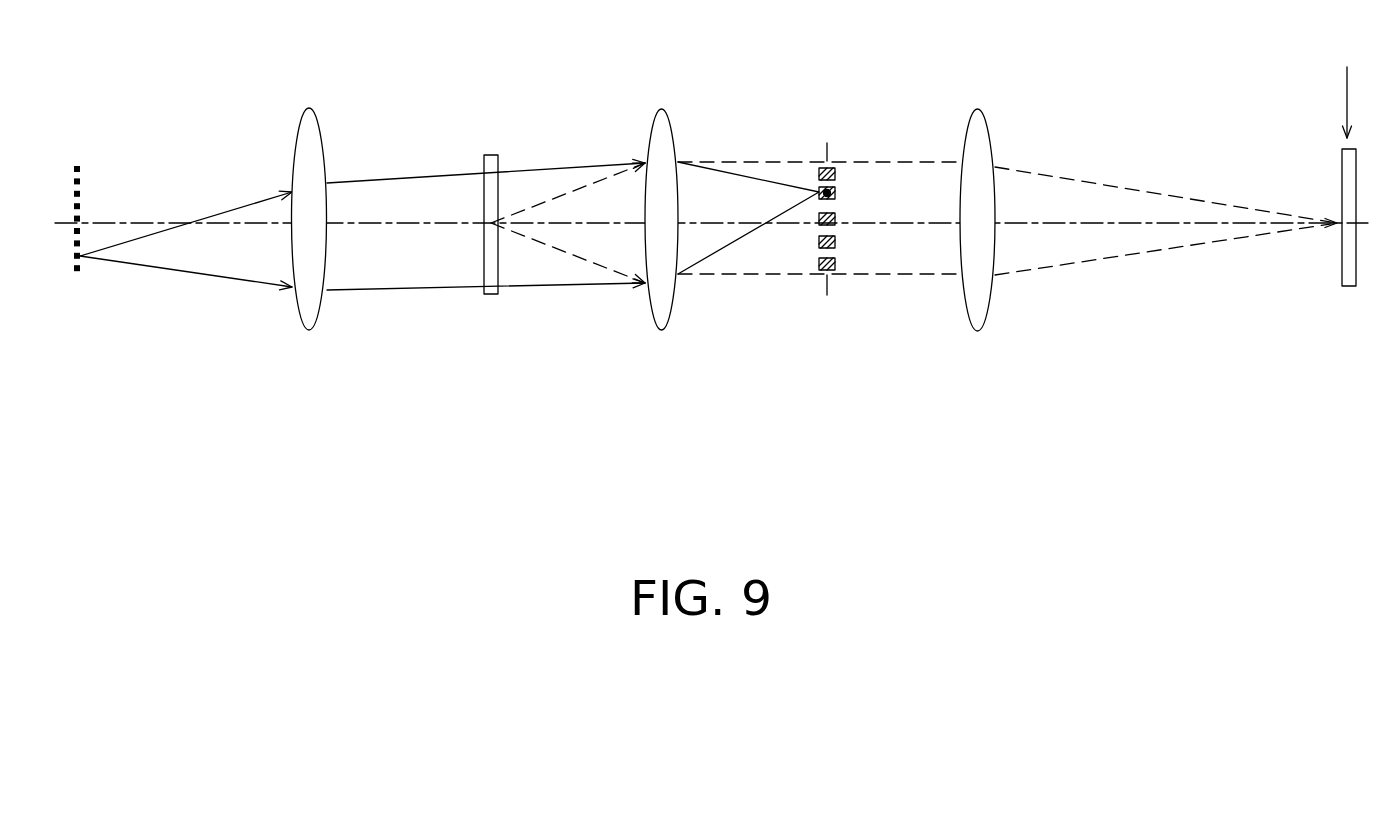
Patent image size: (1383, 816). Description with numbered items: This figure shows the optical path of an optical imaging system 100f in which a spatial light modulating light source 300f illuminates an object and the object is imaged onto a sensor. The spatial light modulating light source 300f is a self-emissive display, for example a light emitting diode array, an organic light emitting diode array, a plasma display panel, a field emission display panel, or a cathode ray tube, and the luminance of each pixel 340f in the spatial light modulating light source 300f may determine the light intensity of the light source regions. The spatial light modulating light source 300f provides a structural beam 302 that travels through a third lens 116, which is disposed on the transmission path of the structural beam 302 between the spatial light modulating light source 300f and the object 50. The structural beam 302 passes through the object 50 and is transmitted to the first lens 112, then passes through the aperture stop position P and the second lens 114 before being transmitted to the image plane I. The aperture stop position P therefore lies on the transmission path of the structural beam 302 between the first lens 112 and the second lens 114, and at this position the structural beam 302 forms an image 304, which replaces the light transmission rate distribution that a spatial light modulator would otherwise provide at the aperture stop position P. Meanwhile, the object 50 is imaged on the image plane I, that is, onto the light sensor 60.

The optical imaging system 100f is at (702, 258).
The spatial light modulating light source 300f is at (71, 254).
The pixel 340f is at (72, 180).
The structural beam 302 is at (220, 278).
The third lens 116 is at (309, 308).
The object 50 is at (492, 295).
The first lens 112 is at (662, 312).
The image 304 is at (813, 245).
The aperture stop position P is at (827, 314).
The second lens 114 is at (978, 308).
The light sensor 60 is at (1347, 275).
The image plane I is at (1347, 81).